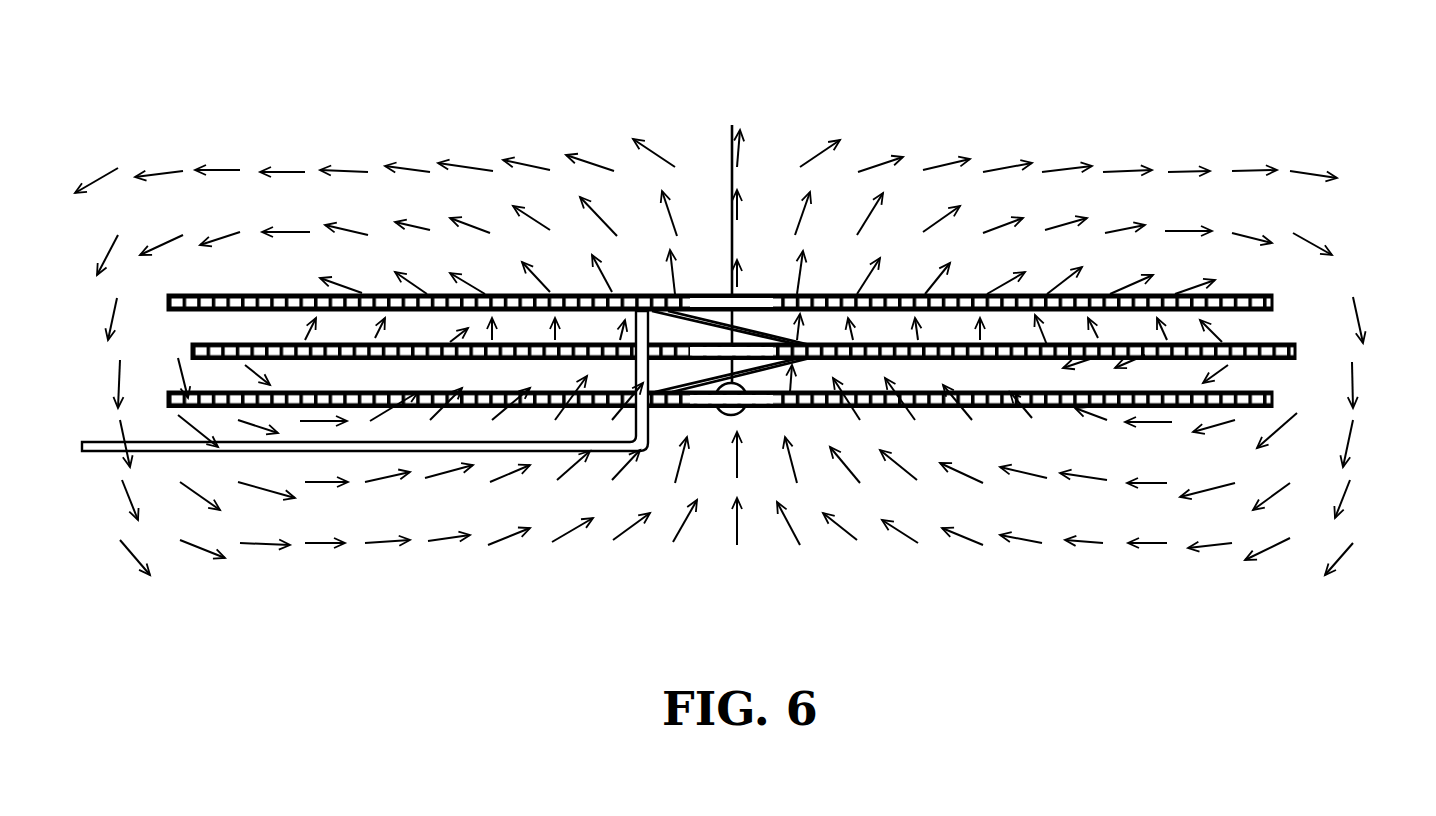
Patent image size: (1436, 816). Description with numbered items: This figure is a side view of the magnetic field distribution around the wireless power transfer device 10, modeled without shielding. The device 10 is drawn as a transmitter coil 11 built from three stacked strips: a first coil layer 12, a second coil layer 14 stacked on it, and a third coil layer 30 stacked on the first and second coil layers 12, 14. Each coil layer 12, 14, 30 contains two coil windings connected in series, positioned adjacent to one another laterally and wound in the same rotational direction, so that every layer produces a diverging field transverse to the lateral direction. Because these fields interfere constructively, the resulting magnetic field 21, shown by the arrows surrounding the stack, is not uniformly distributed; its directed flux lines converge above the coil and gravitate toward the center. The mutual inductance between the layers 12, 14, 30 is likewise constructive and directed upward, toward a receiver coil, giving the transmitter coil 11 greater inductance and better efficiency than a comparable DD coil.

The wireless power transfer device 10 is at (226, 150).
The transmitter coil 11 is at (1291, 252).
The first coil layer 12 is at (1293, 407).
The second coil layer 14 is at (1316, 357).
The magnetic field 21 is at (884, 162).
The third coil layer 30 is at (1302, 299).